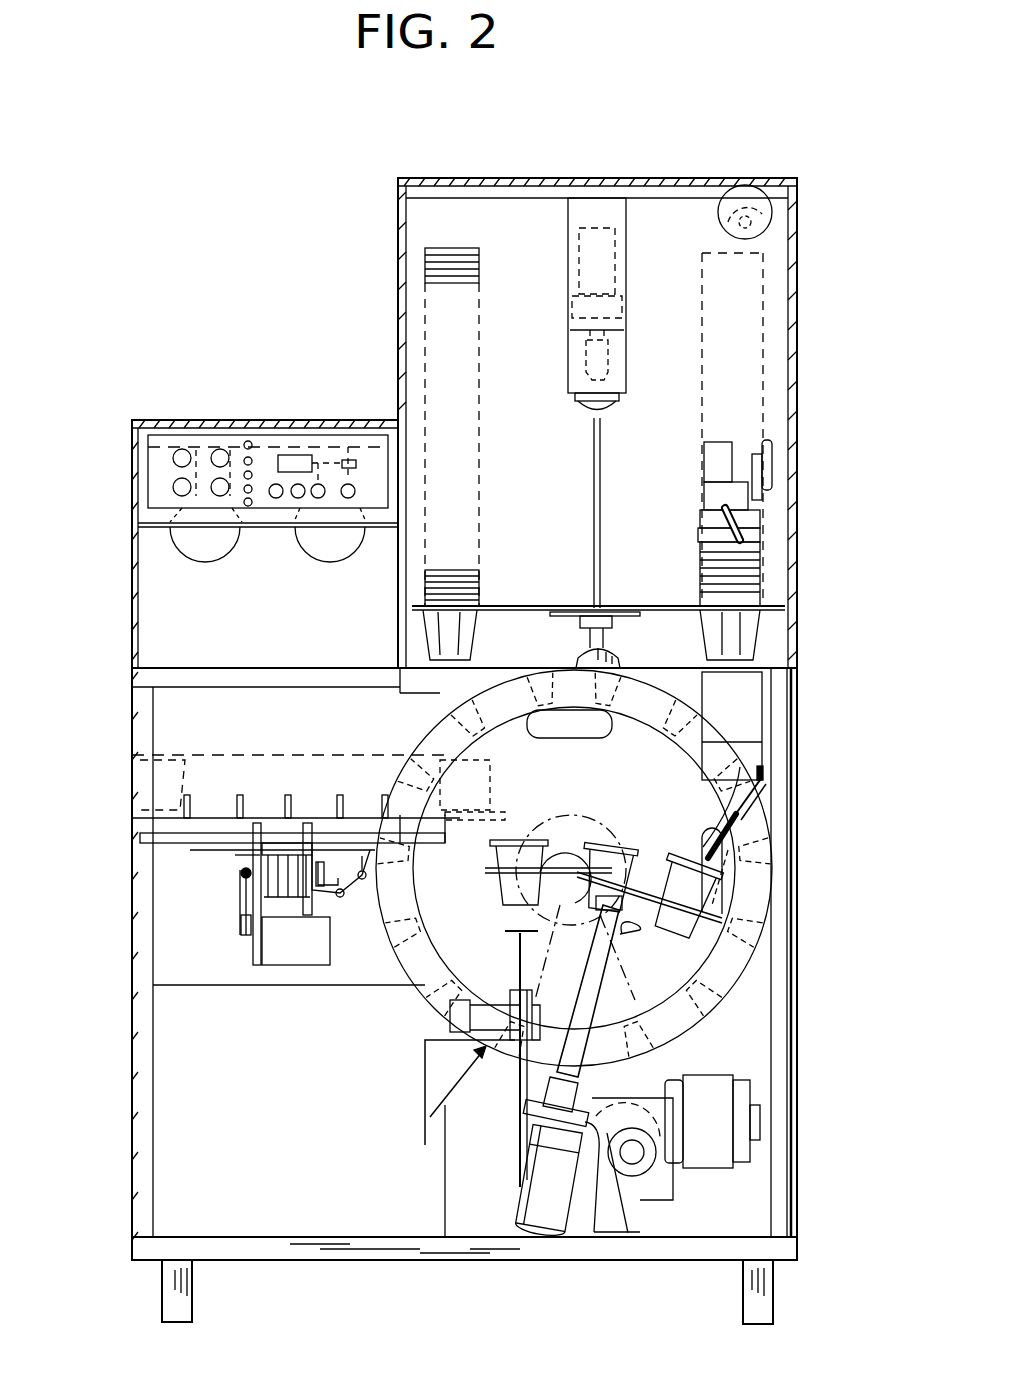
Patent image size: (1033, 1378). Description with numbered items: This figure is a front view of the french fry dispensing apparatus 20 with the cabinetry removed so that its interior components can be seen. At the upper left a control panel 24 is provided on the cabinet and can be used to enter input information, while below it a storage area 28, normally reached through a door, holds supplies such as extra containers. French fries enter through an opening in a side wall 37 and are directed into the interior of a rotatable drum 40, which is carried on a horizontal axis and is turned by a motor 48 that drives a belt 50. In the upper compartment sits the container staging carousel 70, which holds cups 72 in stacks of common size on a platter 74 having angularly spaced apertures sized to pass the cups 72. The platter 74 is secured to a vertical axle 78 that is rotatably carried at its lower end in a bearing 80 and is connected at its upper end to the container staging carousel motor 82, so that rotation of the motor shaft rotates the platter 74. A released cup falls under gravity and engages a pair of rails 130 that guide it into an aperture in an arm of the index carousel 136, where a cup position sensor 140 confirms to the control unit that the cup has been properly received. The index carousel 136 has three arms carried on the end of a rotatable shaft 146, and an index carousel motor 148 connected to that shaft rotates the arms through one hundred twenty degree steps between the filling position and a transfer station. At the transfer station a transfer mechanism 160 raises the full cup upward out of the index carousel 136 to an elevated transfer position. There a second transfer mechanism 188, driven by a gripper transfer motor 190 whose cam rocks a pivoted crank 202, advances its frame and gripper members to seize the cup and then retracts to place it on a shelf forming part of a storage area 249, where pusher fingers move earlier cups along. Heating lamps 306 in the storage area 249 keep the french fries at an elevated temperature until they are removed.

The apparatus for automatically dispensing french fries 20 is at (808, 566).
The control panel 24 is at (268, 455).
The storage area 28 is at (195, 1170).
The side wall 37 is at (791, 899).
The rotatable drum 40 is at (690, 1000).
The motor 48 is at (720, 1160).
The belt 50 is at (710, 1068).
The container staging carousel 70 is at (583, 602).
The cups 72 is at (470, 635).
The platter 74 is at (655, 606).
The vertical axle 78 is at (600, 502).
The bearing 80 is at (612, 656).
The container staging carousel motor 82 is at (583, 240).
The rails 130 is at (748, 822).
The index carousel 136 is at (700, 980).
The cup position sensor 140 is at (700, 951).
The rotatable shaft 146 is at (606, 945).
The index carousel motor 148 is at (543, 1237).
The transfer mechanism 160 is at (482, 1084).
The second transfer mechanism 188 is at (452, 848).
The gripper transfer motor 190 is at (294, 955).
The crank 202 is at (357, 898).
The storage area 249 is at (132, 782).
The heating lamps 306 is at (205, 537).